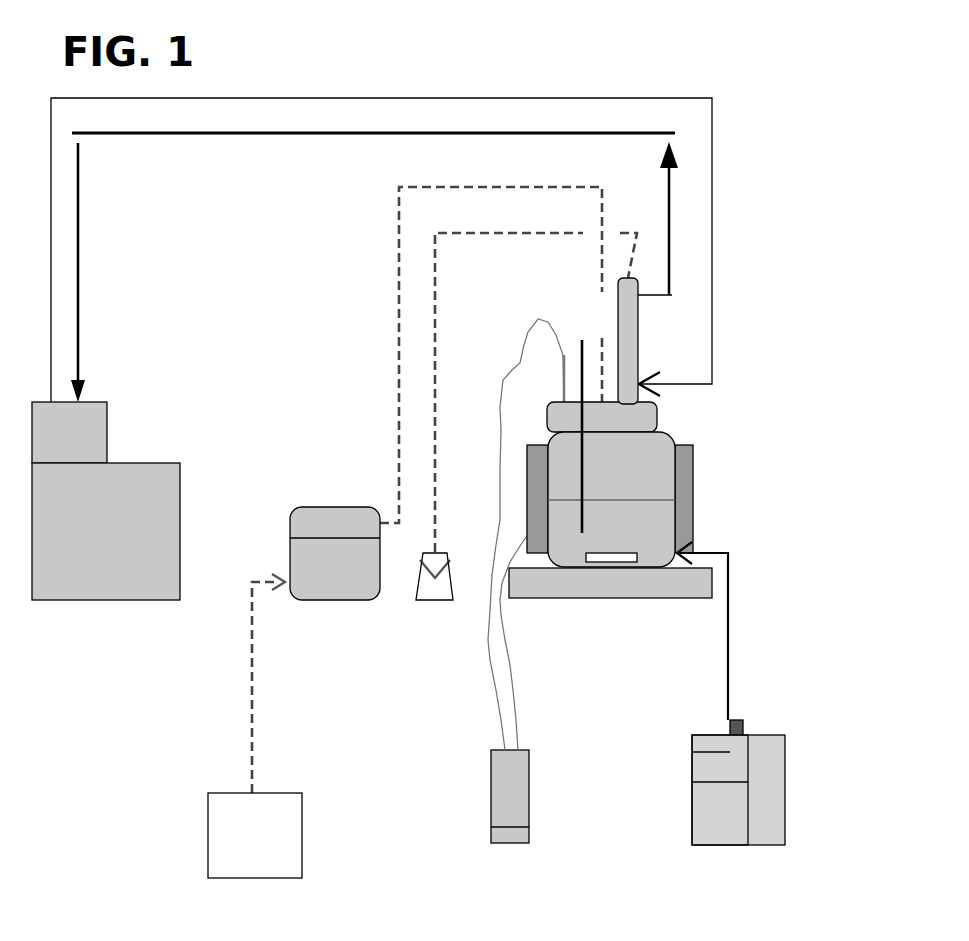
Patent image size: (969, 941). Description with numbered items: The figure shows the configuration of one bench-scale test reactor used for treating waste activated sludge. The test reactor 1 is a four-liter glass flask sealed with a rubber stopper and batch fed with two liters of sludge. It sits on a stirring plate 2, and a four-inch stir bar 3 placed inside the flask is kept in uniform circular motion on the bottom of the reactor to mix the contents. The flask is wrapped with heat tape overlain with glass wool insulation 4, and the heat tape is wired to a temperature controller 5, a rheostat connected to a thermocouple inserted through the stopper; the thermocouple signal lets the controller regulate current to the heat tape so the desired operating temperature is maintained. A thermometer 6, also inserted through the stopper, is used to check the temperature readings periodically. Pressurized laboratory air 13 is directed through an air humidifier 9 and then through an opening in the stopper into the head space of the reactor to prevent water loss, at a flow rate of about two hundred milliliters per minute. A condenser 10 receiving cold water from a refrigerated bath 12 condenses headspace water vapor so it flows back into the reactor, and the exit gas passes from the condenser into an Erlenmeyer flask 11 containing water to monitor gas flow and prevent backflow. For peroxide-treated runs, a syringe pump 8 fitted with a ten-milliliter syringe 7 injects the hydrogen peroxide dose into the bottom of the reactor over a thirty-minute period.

The test reactor 1 is at (611, 484).
The stirring plate 2 is at (610, 583).
The stir bar 3 is at (611, 546).
The heat tape and glass wool insulation 4 is at (620, 499).
The temperature controller 5 is at (526, 581).
The thermometer 6 is at (577, 417).
The syringe 7 is at (710, 662).
The syringe pump 8 is at (735, 829).
The air humidifier 9 is at (335, 553).
The condenser 10 is at (645, 341).
The Erlenmeyer flask 11 is at (429, 599).
The refrigerated bath 12 is at (106, 501).
The pressurized laboratory air 13 is at (255, 835).